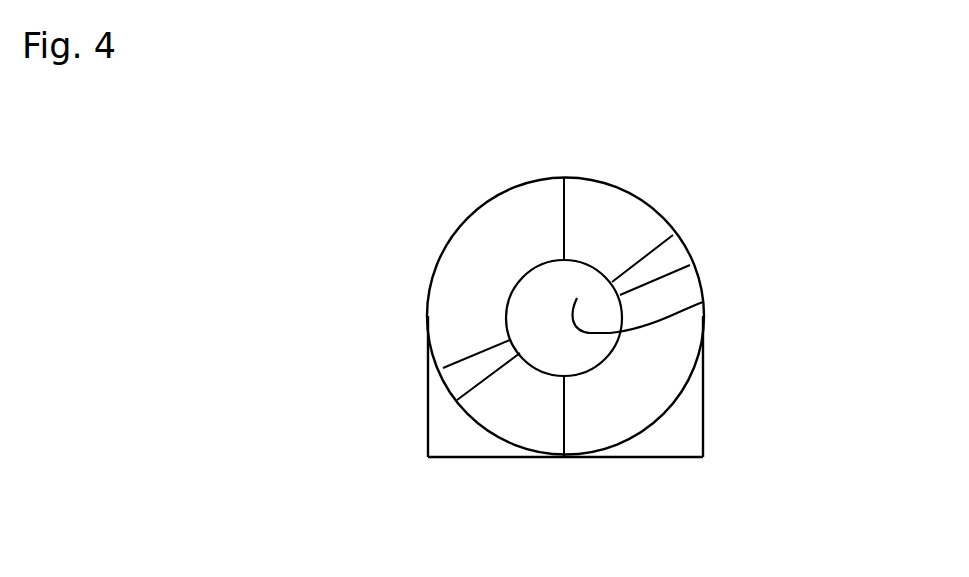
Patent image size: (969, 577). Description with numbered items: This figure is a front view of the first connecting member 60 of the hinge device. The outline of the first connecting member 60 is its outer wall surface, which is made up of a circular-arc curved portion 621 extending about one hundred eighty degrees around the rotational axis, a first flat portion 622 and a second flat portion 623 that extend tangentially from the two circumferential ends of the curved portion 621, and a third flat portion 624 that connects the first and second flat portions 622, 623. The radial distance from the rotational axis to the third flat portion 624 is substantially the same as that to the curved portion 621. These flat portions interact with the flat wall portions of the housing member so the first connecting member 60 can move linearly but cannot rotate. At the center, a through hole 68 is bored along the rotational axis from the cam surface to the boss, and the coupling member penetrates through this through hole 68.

The first connecting member 60 is at (812, 216).
The through hole 68 is at (703, 302).
The circular-arc curved portion 621 is at (600, 178).
The first flat portion 622 is at (703, 405).
The second flat portion 623 is at (427, 412).
The third flat portion 624 is at (643, 458).